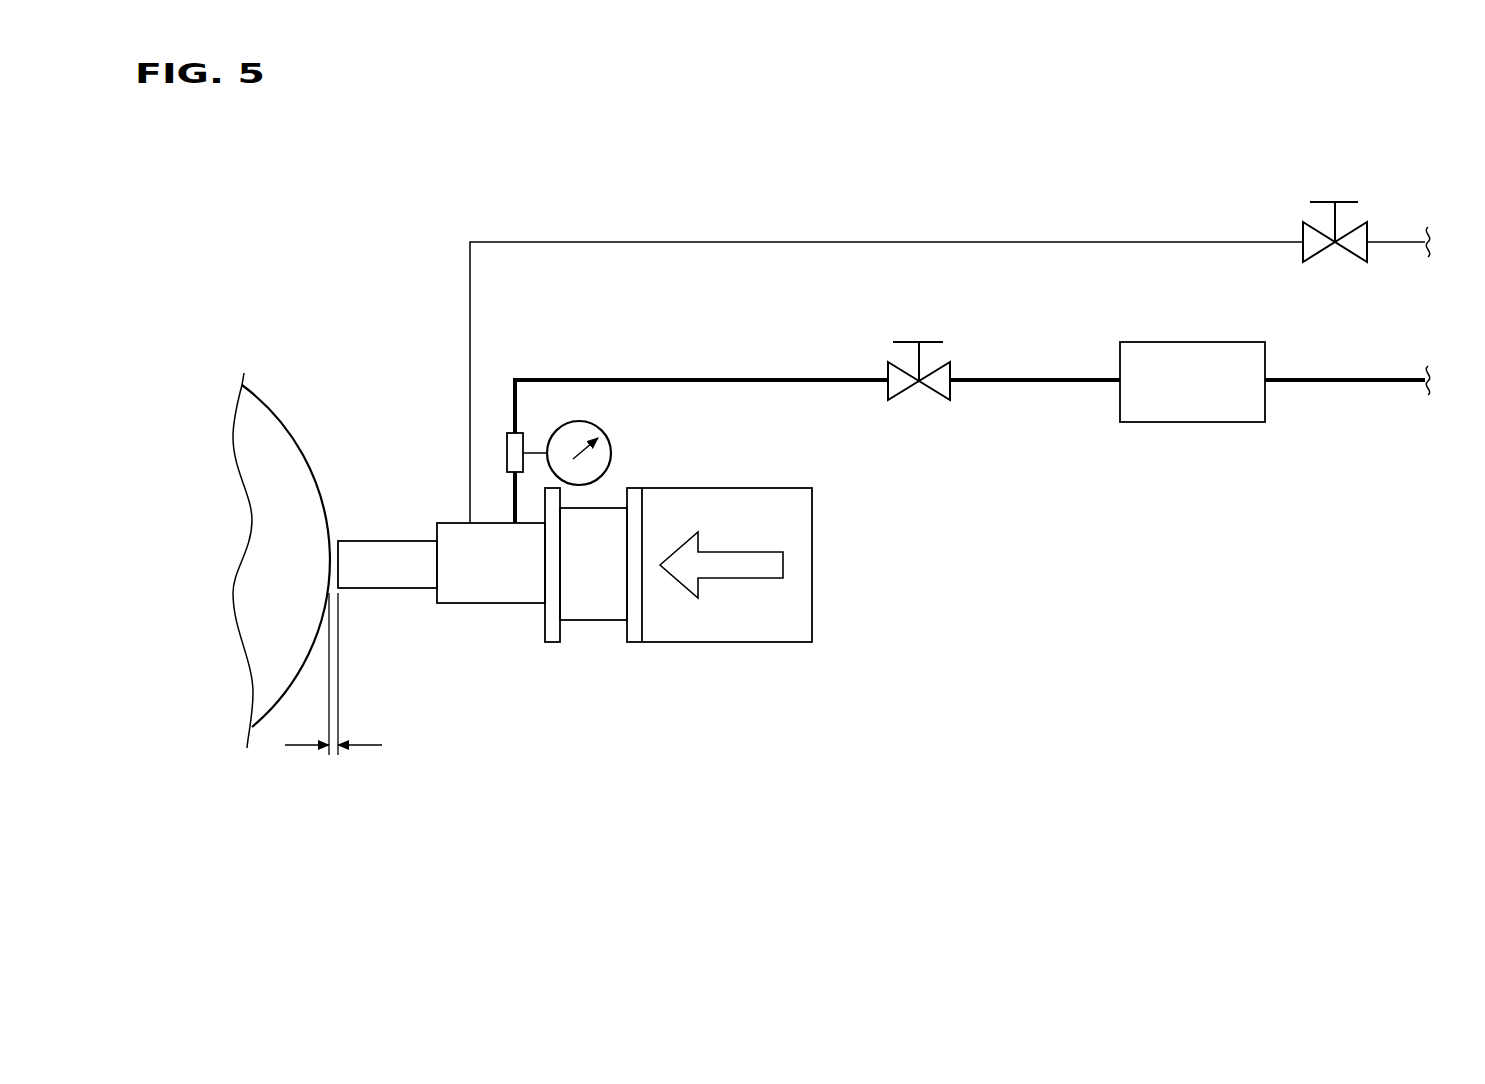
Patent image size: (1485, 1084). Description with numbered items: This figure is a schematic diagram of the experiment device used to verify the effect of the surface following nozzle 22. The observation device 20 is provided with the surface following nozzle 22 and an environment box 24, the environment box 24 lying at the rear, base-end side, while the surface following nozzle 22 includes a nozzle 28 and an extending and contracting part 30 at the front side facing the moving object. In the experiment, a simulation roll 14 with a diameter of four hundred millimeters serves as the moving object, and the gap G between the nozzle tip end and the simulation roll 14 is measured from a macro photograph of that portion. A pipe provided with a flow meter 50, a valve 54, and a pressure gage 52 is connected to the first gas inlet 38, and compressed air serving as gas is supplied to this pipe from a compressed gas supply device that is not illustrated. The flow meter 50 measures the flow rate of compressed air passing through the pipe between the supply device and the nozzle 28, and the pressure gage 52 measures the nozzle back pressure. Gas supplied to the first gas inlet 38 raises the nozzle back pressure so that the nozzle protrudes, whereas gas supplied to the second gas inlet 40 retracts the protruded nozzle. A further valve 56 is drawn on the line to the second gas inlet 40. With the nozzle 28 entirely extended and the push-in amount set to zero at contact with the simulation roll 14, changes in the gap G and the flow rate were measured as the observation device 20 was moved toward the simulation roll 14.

The simulation roll 14 is at (248, 613).
The gap G is at (323, 675).
The observation device 20 is at (588, 650).
The surface following nozzle 22 is at (482, 650).
The environment box 24 is at (731, 642).
The nozzle 28 is at (480, 618).
The extending and contracting part 30 is at (585, 628).
The first gas inlet 38 is at (512, 493).
The second gas inlet 40 is at (470, 459).
The flow meter 50 is at (1197, 422).
The pressure gage 52 is at (568, 436).
The valve 54 is at (907, 342).
The valve 56 is at (1320, 202).